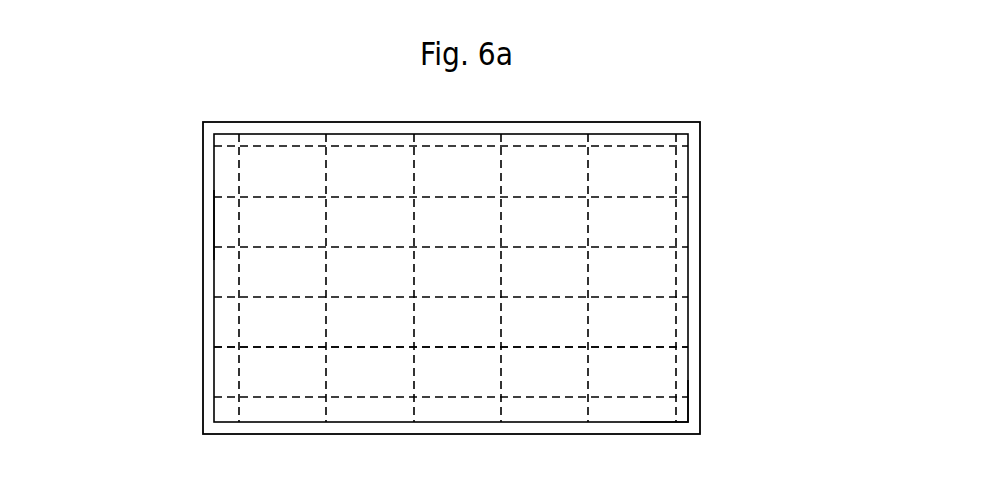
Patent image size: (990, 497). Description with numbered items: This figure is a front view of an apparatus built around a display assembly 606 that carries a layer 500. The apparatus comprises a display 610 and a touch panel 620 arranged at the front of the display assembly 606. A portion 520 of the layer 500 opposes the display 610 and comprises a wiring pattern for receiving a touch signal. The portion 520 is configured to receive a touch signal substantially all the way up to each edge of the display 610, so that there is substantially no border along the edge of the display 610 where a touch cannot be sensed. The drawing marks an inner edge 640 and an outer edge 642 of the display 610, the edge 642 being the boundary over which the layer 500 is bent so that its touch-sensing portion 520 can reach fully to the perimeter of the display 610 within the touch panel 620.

The display assembly 606 is at (722, 152).
The layer 500 is at (630, 247).
The display 610 is at (688, 272).
The touch panel 620 is at (642, 325).
The portion 520 is at (637, 348).
The inner edge 640 is at (687, 402).
The edge 642 is at (215, 222).